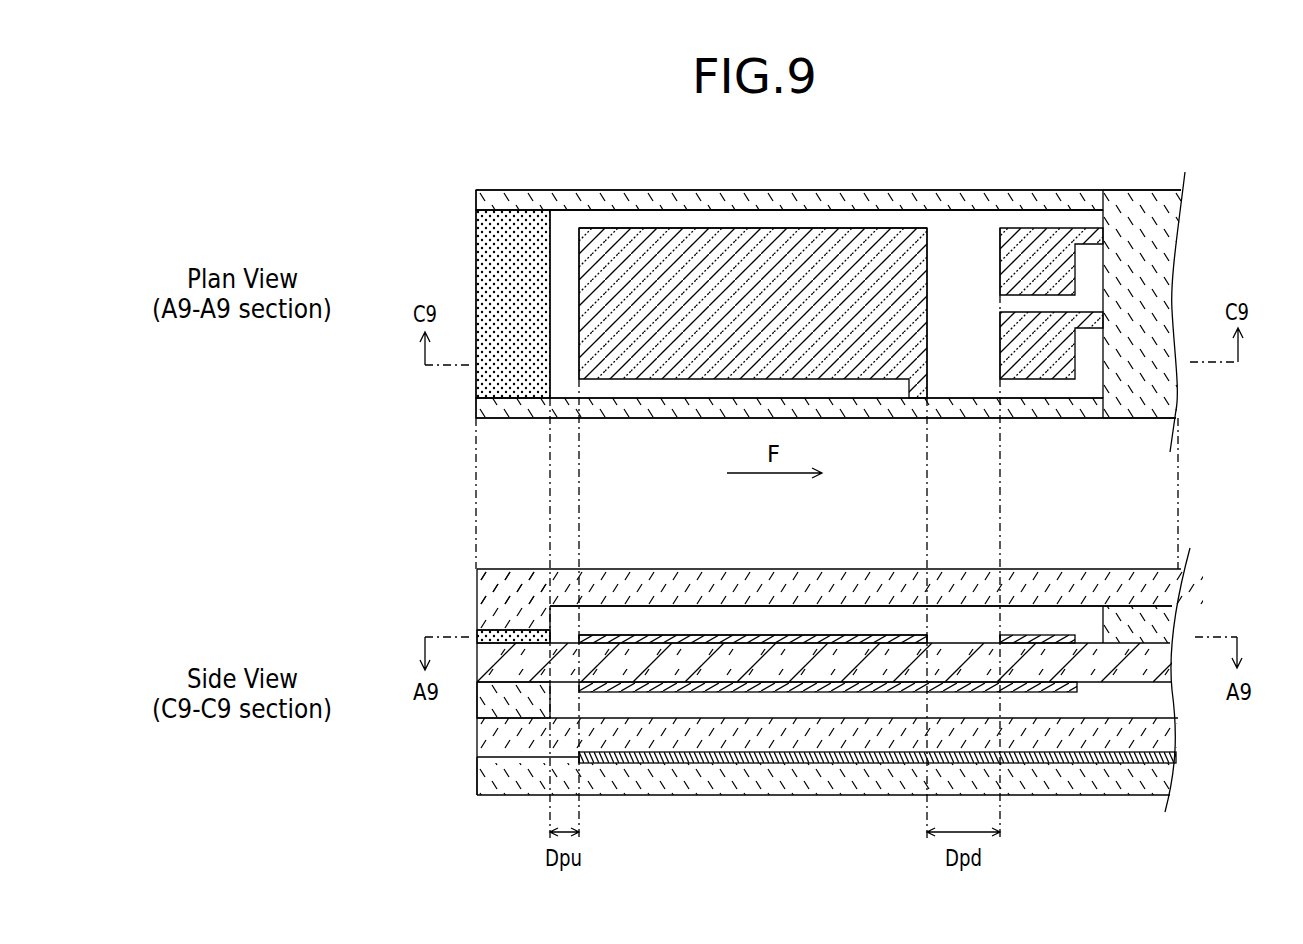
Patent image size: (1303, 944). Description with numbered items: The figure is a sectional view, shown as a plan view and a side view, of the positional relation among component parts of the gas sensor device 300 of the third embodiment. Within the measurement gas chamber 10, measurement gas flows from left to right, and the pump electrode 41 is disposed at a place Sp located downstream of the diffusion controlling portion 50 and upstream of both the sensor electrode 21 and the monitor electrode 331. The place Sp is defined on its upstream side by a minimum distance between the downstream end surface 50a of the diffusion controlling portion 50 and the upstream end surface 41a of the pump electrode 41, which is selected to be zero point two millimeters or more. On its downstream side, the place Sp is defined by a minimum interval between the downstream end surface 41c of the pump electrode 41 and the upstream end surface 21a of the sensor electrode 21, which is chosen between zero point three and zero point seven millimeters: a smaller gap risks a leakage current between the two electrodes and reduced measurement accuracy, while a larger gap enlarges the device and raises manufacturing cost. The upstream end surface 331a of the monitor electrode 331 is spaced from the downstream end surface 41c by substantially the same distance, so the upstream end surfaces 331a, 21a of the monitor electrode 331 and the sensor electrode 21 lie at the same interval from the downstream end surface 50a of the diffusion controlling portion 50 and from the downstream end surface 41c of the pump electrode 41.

The liquid ejecting head / pressure chamber structure 300 is at (444, 178).
The diffusion controlling portion 50 is at (515, 215).
The downstream end surface of the diffusion controlling portion 50a is at (551, 225).
The pump electrode 41 is at (690, 253).
The upstream end surface of the pump electrode 41a is at (579, 268).
The downstream end surface of the pump electrode 41c is at (930, 253).
The place Sp is at (767, 217).
The measurement gas chamber 10 is at (846, 217).
The sensor electrode 21 is at (1042, 242).
The upstream end surface of the sensor electrode 21a is at (1000, 247).
The monitor electrode 331 is at (1062, 366).
The upstream end surface of the monitor electrode 331a is at (1000, 358).